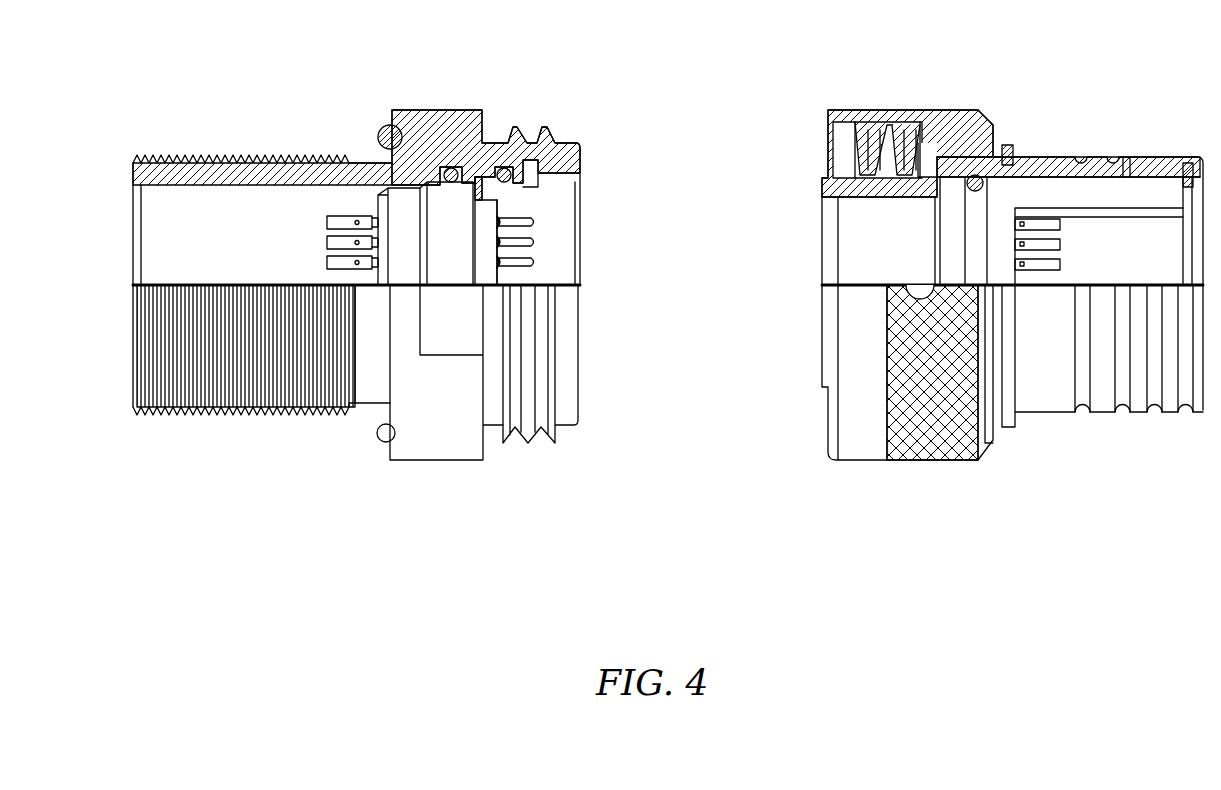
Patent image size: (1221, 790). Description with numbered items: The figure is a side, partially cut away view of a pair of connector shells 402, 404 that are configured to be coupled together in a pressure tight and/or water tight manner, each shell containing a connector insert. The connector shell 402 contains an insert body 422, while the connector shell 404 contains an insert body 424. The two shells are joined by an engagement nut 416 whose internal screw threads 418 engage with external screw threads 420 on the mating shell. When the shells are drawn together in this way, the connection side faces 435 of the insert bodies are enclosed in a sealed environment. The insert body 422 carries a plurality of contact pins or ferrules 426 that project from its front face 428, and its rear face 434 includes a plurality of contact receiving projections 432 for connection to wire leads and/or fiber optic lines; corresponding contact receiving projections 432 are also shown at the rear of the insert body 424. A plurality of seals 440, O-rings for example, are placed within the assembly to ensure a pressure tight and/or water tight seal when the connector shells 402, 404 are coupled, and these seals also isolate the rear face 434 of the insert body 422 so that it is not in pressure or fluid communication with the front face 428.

The connector shell 402 is at (437, 98).
The connector shell 404 is at (958, 90).
The engagement nut 416 is at (882, 110).
The internal screw threads 418 is at (868, 135).
The external screw threads 420 is at (512, 128).
The insert body 422 is at (450, 256).
The insert body 424 is at (968, 222).
The contact pins 426 is at (538, 245).
The front face 428 is at (500, 212).
The contact receiving projections 432 is at (325, 245).
The rear face 434 is at (385, 205).
The connection side faces 435 is at (592, 278).
The seals 440 is at (390, 125).